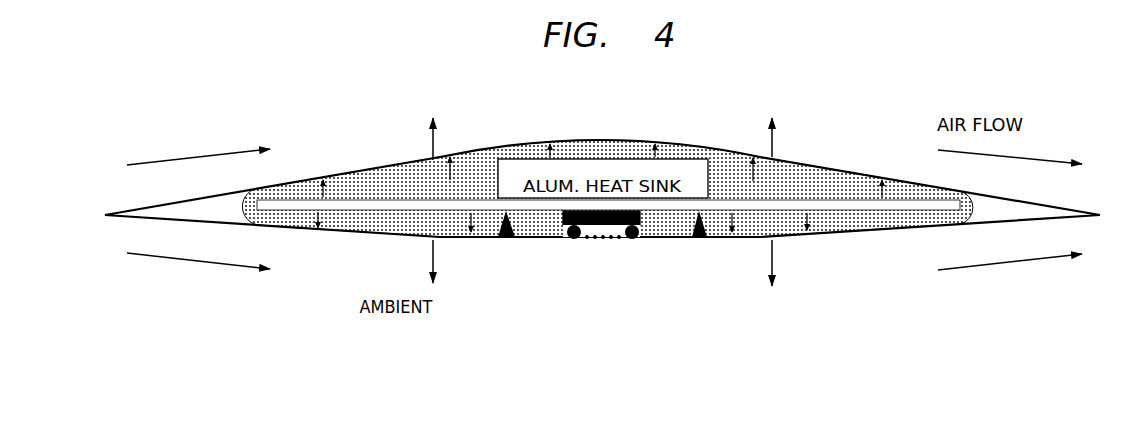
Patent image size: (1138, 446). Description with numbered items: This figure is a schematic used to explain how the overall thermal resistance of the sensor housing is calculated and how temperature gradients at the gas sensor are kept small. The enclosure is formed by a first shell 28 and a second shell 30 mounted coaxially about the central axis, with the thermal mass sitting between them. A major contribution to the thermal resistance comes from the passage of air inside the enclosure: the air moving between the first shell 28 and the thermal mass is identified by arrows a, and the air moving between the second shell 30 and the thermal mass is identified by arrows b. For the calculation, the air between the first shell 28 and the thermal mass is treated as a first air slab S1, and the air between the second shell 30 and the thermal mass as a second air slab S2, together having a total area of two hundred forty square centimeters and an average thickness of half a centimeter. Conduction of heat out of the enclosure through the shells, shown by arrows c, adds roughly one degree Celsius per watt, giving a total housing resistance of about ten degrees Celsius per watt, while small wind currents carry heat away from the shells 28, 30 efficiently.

The second shell 30 is at (477, 150).
The first shell 28 is at (537, 242).
The arrows a is at (393, 220).
The arrows b is at (393, 185).
The arrows c is at (437, 258).
The first air slab S1 is at (717, 227).
The second air slab S2 is at (725, 170).